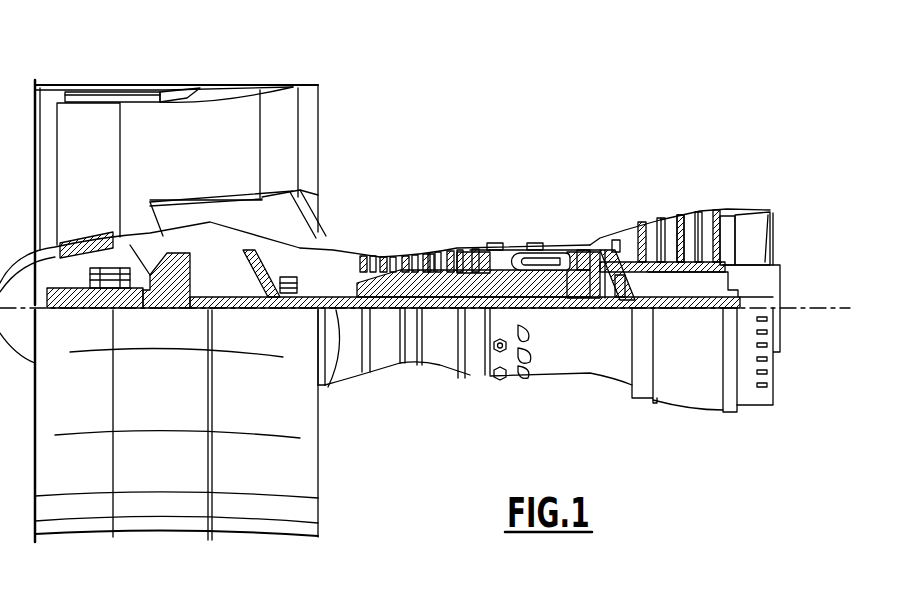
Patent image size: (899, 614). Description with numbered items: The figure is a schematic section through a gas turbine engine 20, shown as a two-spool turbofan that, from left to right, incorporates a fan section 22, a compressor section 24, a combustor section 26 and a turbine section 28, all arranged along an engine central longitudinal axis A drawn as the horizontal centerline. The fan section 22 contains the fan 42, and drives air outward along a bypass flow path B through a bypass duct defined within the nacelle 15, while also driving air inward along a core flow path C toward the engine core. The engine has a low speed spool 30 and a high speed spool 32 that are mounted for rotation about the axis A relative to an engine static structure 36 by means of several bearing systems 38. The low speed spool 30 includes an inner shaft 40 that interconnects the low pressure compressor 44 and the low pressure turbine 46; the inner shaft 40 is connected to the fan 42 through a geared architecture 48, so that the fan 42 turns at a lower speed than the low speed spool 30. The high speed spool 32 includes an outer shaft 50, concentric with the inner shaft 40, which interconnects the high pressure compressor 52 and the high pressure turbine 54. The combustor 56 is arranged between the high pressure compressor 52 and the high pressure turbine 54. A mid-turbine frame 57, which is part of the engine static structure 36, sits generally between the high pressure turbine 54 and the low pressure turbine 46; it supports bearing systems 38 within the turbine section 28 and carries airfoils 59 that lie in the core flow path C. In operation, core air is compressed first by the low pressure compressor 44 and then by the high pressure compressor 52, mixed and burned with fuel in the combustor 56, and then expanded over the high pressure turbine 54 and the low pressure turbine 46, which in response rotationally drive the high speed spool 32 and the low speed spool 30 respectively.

The gas turbine engine 20 is at (425, 178).
The fan section 22 is at (176, 163).
The nacelle 15 is at (234, 136).
The fan 42 is at (176, 322).
The low pressure compressor 44 is at (255, 203).
The compressor section 24 is at (416, 236).
The high pressure compressor 52 is at (449, 242).
The high speed spool 32 is at (535, 229).
The combustor section 26 is at (613, 235).
The combustor 56 is at (551, 241).
The turbine section 28 is at (686, 205).
The mid-turbine frame 57 is at (614, 209).
The high pressure turbine 54 is at (610, 247).
The low pressure turbine 46 is at (699, 216).
The airfoils 59 is at (712, 286).
The outer shaft 50 is at (393, 316).
The geared architecture 48 is at (160, 295).
The bearing systems 38 is at (360, 313).
The inner shaft 40 is at (348, 378).
The low speed spool 30 is at (394, 355).
The engine static structure 36 is at (537, 369).
The engine central longitudinal axis A is at (858, 286).
The bypass flow path B is at (112, 130).
The core flow path C is at (134, 214).